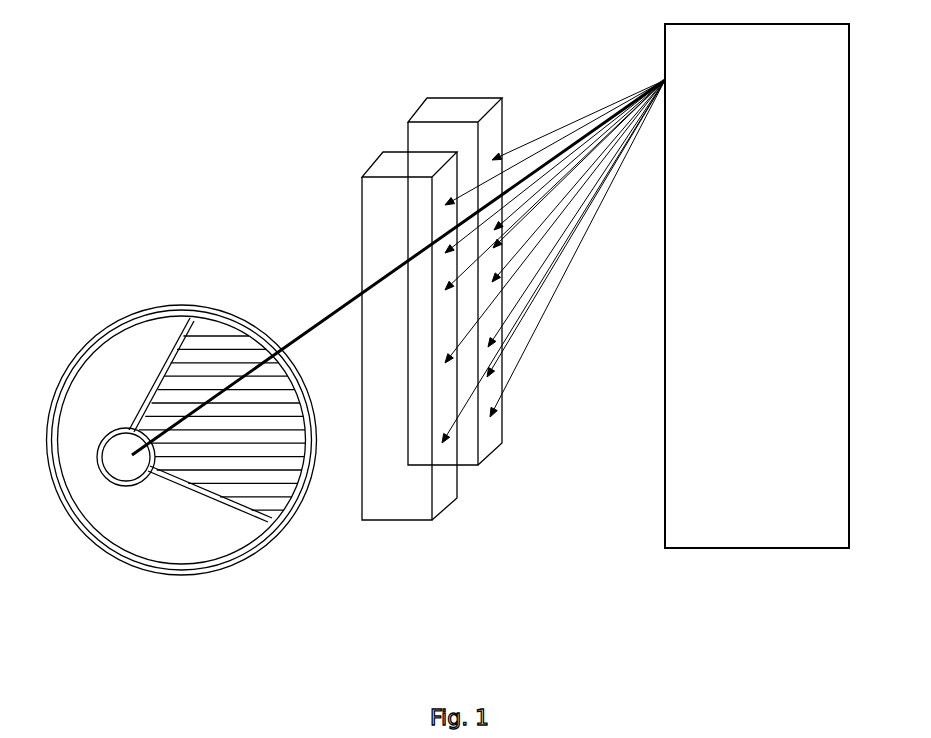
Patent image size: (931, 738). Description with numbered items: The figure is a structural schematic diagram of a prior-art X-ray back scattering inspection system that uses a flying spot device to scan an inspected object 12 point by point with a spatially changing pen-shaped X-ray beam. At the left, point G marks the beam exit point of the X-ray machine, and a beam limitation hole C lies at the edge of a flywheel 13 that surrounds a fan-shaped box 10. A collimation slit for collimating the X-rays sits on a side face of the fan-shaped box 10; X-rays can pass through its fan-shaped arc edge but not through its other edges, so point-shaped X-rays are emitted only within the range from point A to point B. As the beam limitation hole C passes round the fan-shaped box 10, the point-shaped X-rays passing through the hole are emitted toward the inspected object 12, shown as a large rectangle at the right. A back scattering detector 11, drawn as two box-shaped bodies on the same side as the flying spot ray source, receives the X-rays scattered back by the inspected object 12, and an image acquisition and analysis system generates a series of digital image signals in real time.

The fan-shaped box 10 is at (277, 483).
The back scattering detector 11 is at (398, 497).
The inspected object 12 is at (730, 503).
The flywheel 13 is at (163, 568).